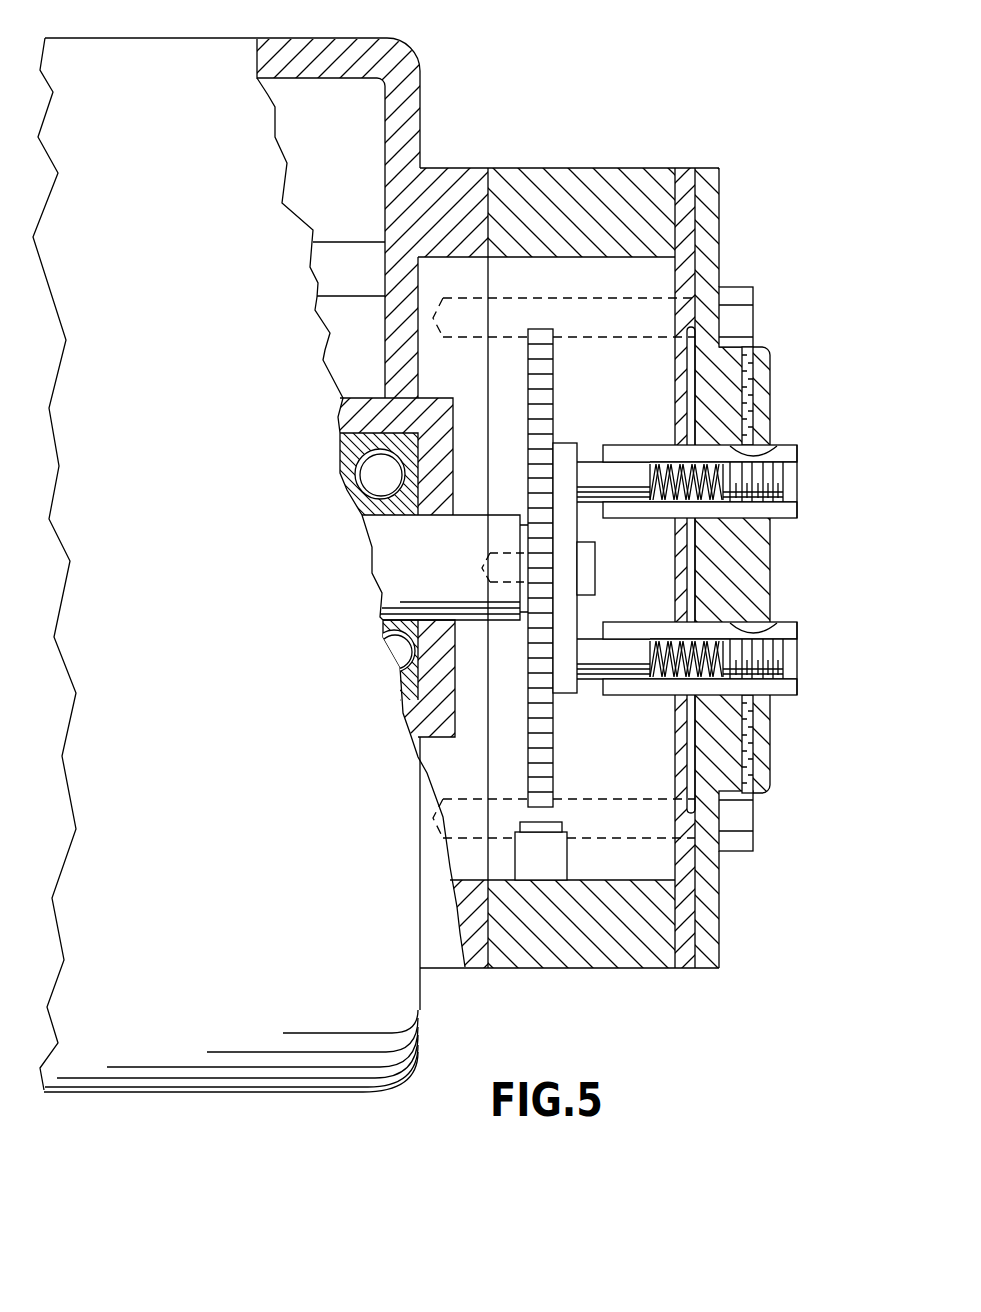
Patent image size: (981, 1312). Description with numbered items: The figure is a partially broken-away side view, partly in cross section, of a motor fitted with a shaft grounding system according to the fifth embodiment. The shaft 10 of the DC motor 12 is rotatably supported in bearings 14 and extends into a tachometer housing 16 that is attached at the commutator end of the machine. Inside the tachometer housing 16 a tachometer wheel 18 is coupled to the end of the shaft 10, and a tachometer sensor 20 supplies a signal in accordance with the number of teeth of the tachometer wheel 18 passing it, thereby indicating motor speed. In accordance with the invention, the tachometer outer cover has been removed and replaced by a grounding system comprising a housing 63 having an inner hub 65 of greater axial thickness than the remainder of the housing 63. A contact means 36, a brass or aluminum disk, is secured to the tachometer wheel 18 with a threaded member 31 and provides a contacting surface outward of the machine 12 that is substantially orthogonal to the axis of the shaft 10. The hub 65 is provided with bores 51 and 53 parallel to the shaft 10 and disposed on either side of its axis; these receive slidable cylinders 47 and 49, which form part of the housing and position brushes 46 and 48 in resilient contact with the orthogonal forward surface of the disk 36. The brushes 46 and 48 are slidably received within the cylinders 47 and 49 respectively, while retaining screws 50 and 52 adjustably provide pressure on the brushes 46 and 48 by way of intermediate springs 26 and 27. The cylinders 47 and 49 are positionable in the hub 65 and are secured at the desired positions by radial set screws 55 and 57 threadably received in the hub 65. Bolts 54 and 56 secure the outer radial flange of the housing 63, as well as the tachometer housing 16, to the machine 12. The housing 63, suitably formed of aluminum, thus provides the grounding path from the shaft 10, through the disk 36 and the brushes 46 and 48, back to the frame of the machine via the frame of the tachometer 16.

The shaft 10 is at (427, 580).
The DC motor 12 is at (349, 1093).
The bearings 14 is at (363, 395).
The tachometer housing 16 is at (597, 968).
The tachometer wheel 18 is at (553, 330).
The tachometer sensor 20 is at (567, 866).
The spring 26 is at (668, 468).
The spring 27 is at (668, 640).
The threaded member 31 is at (595, 580).
The contact means 36 is at (563, 443).
The brush 46 is at (590, 462).
The slidable cylinder 47 is at (783, 520).
The brush 48 is at (590, 680).
The slidable cylinder 49 is at (783, 692).
The retaining screw 50 is at (797, 500).
The bore 51 is at (777, 447).
The retaining screw 52 is at (787, 663).
The bore 53 is at (783, 623).
The bolt 54 is at (753, 317).
The radial set screw 55 is at (755, 743).
The bolt 56 is at (753, 823).
The radial set screw 57 is at (755, 400).
The housing 63 is at (736, 892).
The inner hub 65 is at (772, 775).